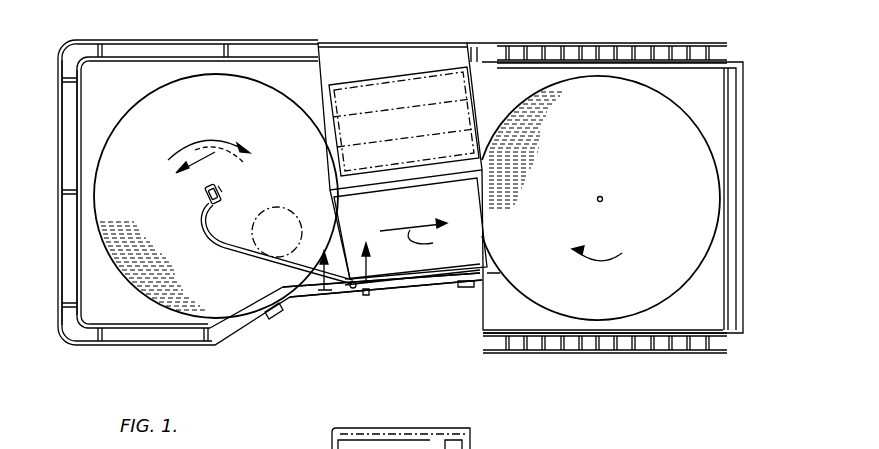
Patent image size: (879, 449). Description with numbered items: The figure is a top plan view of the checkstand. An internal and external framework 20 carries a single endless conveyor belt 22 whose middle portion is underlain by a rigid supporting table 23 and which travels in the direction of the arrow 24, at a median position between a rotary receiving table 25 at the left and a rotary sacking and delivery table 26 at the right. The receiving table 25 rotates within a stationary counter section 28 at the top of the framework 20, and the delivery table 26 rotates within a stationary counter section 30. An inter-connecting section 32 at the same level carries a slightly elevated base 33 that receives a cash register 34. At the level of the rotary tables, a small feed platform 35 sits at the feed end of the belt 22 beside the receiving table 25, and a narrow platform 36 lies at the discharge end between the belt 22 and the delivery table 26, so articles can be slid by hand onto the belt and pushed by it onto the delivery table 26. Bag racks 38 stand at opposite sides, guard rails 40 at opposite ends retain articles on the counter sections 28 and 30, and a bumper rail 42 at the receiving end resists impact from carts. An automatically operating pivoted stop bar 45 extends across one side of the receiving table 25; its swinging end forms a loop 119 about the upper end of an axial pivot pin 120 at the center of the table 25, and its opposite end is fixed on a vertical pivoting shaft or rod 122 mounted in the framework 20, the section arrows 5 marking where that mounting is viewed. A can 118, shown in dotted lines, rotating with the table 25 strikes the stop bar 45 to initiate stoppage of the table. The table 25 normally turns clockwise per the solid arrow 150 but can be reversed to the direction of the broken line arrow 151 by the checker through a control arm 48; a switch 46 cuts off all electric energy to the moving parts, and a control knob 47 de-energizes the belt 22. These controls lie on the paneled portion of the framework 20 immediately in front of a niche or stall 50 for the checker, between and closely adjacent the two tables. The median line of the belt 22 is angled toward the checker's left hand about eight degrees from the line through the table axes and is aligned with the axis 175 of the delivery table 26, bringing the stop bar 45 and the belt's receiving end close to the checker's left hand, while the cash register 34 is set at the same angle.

The framework 20 is at (118, 334).
The endless conveyor belt 22 is at (410, 228).
The rigid supporting table 23 is at (418, 277).
The arrow 24 is at (420, 235).
The rotary receiving table 25 is at (143, 104).
The rotary sacking and delivery table 26 is at (690, 134).
The stationary counter section 28 is at (126, 72).
The stationary counter section 30 is at (668, 76).
The inter-connecting section 32 is at (432, 165).
The elevated base 33 is at (345, 62).
The cash register 34 is at (408, 74).
The feed platform 35 is at (334, 222).
The narrow platform 36 is at (492, 178).
The bag racks 38 is at (553, 44).
The guard rails 40 is at (78, 282).
The bumper rail 42 is at (60, 240).
The pivoted stop bar 45 is at (228, 249).
The switch 46 is at (272, 324).
The control knob 47 is at (363, 296).
The control arm 48 is at (470, 287).
The niche or stall 50 is at (382, 314).
The section line 5- 5 is at (346, 257).
The can 118 is at (283, 206).
The loop 119 is at (222, 190).
The axial pivot pin 120 is at (205, 193).
The vertical pivoting shaft or rod 122 is at (350, 289).
The solid arrow 150 is at (224, 140).
The broken line arrow 151 is at (192, 150).
The axis 175 is at (600, 196).